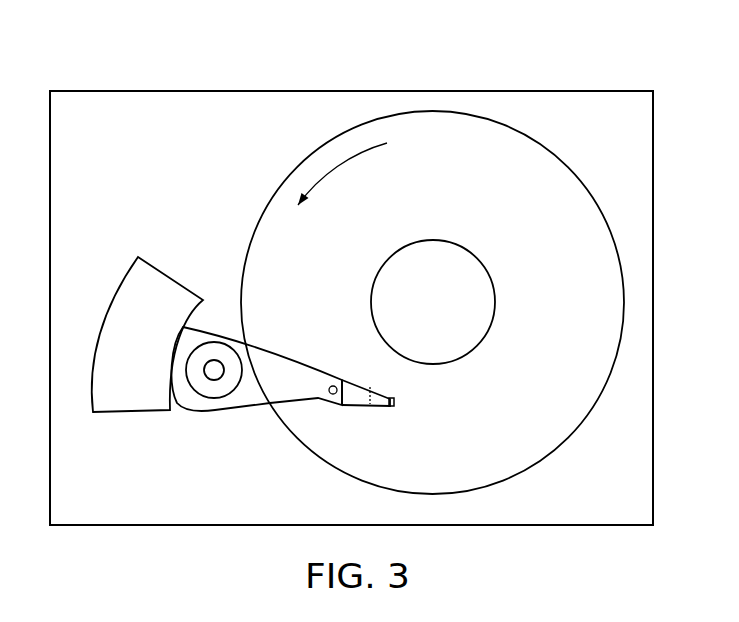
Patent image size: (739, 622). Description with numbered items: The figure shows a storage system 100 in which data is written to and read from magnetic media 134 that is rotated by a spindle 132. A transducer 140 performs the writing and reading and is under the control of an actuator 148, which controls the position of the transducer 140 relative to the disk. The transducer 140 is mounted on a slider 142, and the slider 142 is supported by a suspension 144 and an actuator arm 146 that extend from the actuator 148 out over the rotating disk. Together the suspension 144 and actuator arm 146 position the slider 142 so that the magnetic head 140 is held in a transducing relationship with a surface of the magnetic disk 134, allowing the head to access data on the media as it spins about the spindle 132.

The storage system 100 is at (555, 53).
The spindle 132 is at (458, 242).
The magnetic media 134 is at (585, 306).
The transducer 140 is at (394, 405).
The slider 142 is at (392, 400).
The suspension 144 is at (353, 404).
The actuator arm 146 is at (278, 353).
The actuator 148 is at (214, 372).